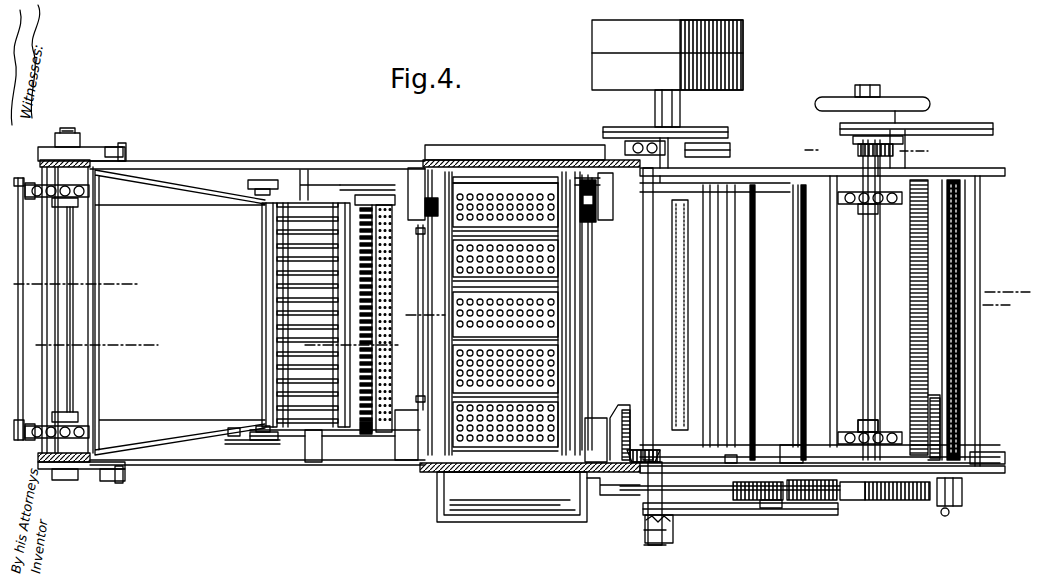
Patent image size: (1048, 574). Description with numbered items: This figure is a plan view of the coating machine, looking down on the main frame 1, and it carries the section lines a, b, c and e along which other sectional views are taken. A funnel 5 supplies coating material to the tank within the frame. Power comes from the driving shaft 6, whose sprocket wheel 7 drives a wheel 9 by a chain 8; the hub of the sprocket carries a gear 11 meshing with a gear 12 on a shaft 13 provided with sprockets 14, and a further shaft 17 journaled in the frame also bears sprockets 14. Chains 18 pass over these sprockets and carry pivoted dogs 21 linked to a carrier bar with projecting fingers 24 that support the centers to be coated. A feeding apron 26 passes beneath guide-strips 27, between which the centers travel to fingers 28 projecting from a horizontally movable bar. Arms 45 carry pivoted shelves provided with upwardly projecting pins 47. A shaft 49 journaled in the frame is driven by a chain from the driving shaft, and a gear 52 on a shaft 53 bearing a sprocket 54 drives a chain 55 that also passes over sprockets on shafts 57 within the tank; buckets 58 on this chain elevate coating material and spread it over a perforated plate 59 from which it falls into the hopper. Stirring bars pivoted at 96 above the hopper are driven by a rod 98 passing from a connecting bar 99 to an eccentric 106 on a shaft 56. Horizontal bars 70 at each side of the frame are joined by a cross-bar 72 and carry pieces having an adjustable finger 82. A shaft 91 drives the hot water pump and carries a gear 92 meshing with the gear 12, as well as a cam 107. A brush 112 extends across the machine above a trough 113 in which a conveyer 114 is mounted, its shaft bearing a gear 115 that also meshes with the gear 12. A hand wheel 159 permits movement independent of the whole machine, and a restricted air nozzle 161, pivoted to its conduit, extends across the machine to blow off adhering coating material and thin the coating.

The main frame 1 is at (306, 461).
The funnel 5 is at (540, 521).
The driving shaft 6 is at (668, 109).
The sprocket wheel 7 is at (674, 516).
The chain 8 is at (752, 516).
The wheel 9 is at (812, 510).
The gear 11 is at (746, 500).
The gear 12 is at (916, 500).
The shaft 13 is at (866, 330).
The sprockets 14 is at (90, 190).
The shaft 17 is at (72, 251).
The chains 18 is at (26, 180).
The dogs 21 is at (260, 181).
The projecting fingers 24 is at (378, 278).
The feeding apron 26 is at (180, 312).
The guide-strips 27 is at (265, 269).
The fingers 28 is at (371, 250).
The arms 45 is at (374, 205).
The pins 47 is at (374, 312).
The shaft 49 is at (645, 323).
The gear 52 is at (621, 418).
The shaft 53 is at (580, 462).
The sprocket 54 is at (455, 455).
The chain 55 is at (456, 174).
The shaft 56 is at (430, 202).
The shafts 57 is at (646, 488).
The buckets 58 is at (555, 291).
The perforated plate 59 is at (566, 330).
The horizontal bars 70 is at (776, 506).
The cross-bar 72 is at (754, 322).
The adjustable finger 82 is at (765, 460).
The shaft 91 is at (830, 273).
The gear 92 is at (842, 502).
The pivot 96 is at (424, 233).
The rod 98 is at (592, 273).
The connecting bar 99 is at (426, 363).
The eccentric 106 is at (608, 211).
The cam 107 is at (857, 413).
The brush 112 is at (910, 318).
The trough 113 is at (977, 397).
The conveyer 114 is at (962, 252).
The gear 115 is at (960, 489).
The hand wheel 159 is at (904, 130).
The nozzle 161 is at (690, 284).
The section line a- a is at (516, 282).
The section line b- b is at (866, 150).
The section line c- c is at (707, 311).
The section line e- e is at (218, 341).